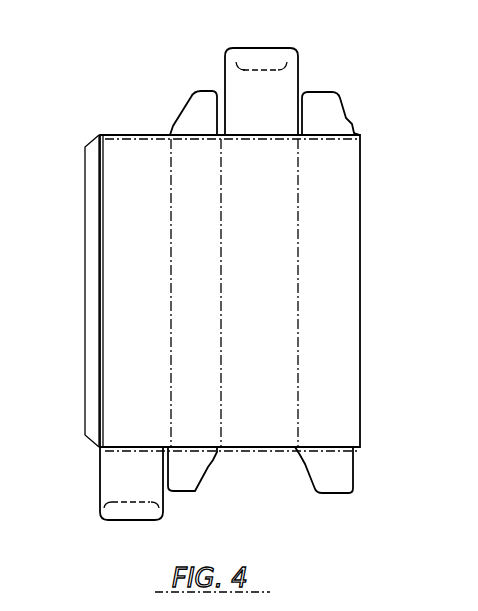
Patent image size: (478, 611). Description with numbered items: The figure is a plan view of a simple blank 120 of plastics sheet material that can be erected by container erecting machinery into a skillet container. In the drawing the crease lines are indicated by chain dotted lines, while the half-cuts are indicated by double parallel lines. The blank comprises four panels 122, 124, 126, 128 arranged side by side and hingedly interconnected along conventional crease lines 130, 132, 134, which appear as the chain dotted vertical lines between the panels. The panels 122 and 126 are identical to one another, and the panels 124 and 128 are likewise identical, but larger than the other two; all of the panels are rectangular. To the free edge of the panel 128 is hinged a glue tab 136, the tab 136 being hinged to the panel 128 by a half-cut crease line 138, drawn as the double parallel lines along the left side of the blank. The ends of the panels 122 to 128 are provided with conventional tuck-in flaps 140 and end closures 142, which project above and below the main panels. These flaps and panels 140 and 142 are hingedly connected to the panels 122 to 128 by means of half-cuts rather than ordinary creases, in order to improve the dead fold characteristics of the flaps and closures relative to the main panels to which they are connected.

The blank 120 is at (362, 415).
The panel 122 is at (342, 336).
The panel 124 is at (272, 336).
The panel 126 is at (212, 336).
The panel 128 is at (152, 336).
The crease line 130 is at (296, 253).
The crease line 132 is at (219, 232).
The crease line 134 is at (169, 228).
The glue tab 136 is at (84, 166).
The half-cut crease line 138 is at (103, 172).
The tuck-in flap 140 is at (192, 96).
The end closure 142 is at (229, 62).